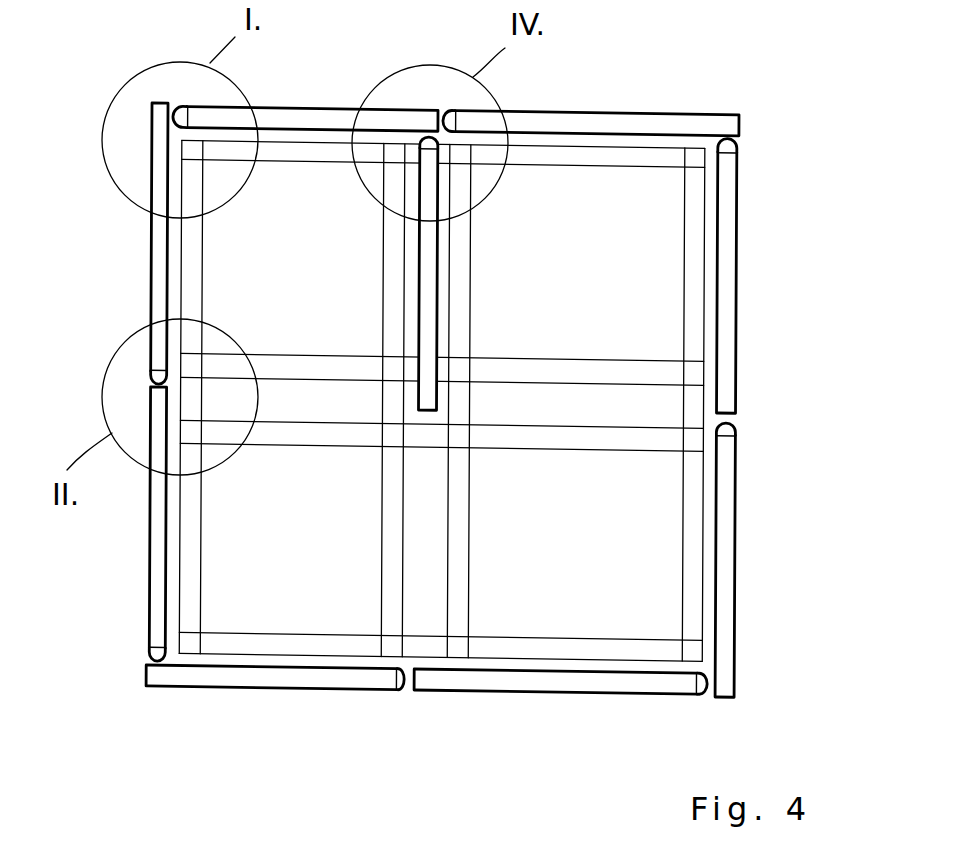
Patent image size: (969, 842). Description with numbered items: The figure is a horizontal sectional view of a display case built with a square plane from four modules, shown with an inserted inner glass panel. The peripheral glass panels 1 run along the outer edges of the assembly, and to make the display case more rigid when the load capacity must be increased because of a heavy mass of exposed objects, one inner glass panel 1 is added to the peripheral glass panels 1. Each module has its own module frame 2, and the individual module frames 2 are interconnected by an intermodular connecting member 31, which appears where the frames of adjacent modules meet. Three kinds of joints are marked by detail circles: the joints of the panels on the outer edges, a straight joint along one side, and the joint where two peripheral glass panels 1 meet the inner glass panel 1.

The glass panel 1 is at (297, 107).
The module frame 2 is at (605, 153).
The intermodular connecting member 31 is at (190, 393).